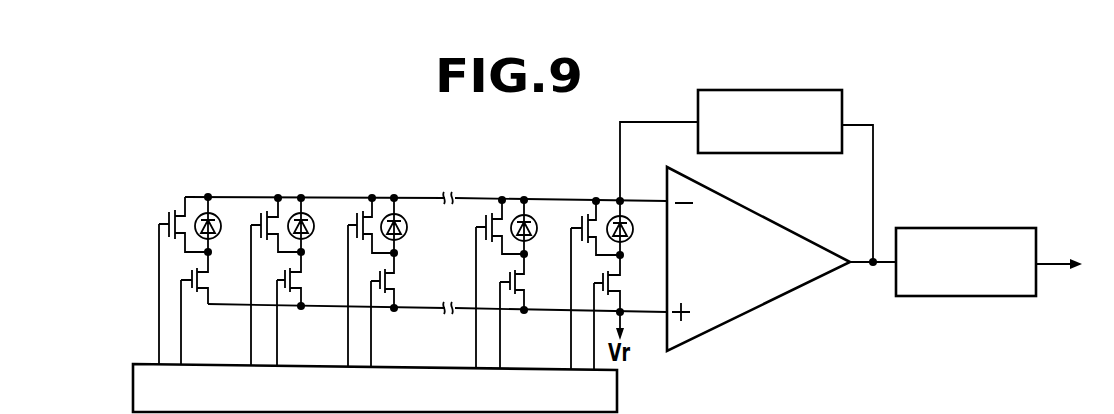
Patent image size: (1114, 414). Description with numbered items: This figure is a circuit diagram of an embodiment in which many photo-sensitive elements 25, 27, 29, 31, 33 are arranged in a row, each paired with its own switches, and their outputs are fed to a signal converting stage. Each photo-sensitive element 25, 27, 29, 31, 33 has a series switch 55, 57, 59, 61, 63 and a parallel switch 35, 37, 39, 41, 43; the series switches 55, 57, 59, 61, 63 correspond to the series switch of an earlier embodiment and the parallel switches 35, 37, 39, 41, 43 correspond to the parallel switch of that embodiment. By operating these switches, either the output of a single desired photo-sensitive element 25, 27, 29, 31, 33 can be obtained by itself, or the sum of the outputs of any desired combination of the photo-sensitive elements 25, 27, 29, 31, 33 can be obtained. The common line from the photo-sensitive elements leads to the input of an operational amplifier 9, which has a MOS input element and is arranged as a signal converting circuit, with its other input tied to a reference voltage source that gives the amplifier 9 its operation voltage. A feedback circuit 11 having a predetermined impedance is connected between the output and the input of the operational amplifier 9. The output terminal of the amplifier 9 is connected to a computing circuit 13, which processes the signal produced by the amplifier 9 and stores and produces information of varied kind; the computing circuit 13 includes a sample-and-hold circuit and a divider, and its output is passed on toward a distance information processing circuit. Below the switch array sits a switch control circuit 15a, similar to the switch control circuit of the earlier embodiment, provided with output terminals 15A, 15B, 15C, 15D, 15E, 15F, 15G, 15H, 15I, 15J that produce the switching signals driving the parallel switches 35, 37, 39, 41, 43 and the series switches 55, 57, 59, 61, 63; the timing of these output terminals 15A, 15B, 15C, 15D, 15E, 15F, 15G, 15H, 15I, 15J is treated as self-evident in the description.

The operational amplifier 9 is at (805, 290).
The feedback circuit 11 is at (818, 153).
The computing circuit 13 is at (983, 228).
The switch control circuit 15a is at (617, 388).
The output terminal 15A is at (159, 366).
The output terminal 15B is at (181, 364).
The output terminal 15C is at (251, 365).
The output terminal 15D is at (277, 365).
The output terminal 15E is at (348, 366).
The output terminal 15F is at (371, 366).
The output terminal 15G is at (476, 367).
The output terminal 15H is at (500, 367).
The output terminal 15I is at (571, 370).
The output terminal 15J is at (594, 370).
The photo-sensitive element 25 is at (222, 226).
The photo-sensitive element 27 is at (315, 223).
The photo-sensitive element 29 is at (408, 228).
The photo-sensitive element 31 is at (538, 226).
The photo-sensitive element 33 is at (633, 230).
The parallel switch 35 is at (167, 212).
The parallel switch 37 is at (258, 236).
The parallel switch 39 is at (352, 236).
The parallel switch 41 is at (482, 236).
The parallel switch 43 is at (577, 238).
The series switch 55 is at (190, 292).
The series switch 57 is at (298, 285).
The series switch 59 is at (392, 283).
The series switch 61 is at (522, 288).
The series switch 63 is at (618, 290).